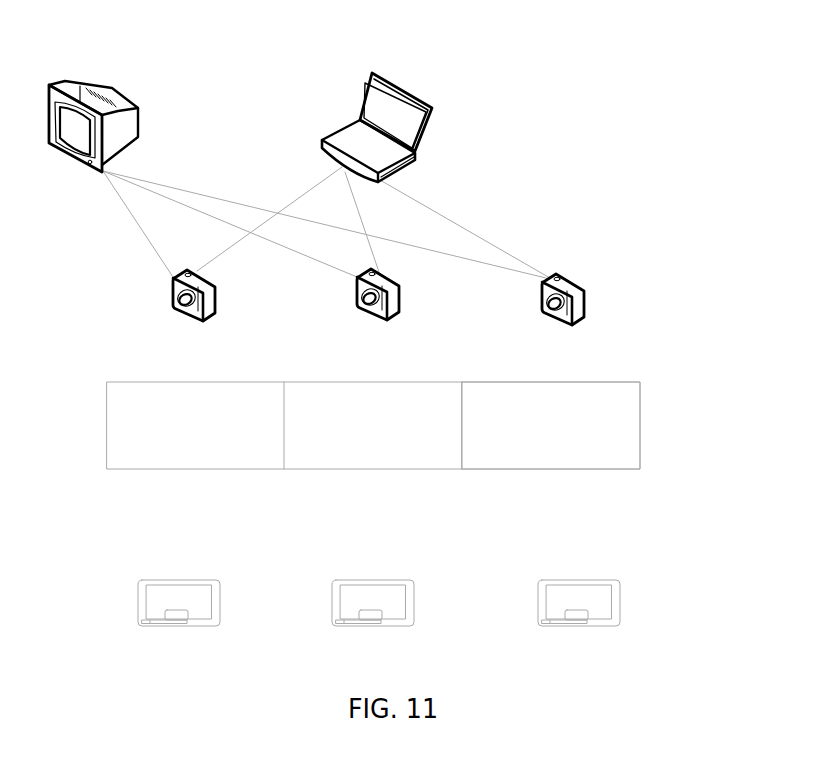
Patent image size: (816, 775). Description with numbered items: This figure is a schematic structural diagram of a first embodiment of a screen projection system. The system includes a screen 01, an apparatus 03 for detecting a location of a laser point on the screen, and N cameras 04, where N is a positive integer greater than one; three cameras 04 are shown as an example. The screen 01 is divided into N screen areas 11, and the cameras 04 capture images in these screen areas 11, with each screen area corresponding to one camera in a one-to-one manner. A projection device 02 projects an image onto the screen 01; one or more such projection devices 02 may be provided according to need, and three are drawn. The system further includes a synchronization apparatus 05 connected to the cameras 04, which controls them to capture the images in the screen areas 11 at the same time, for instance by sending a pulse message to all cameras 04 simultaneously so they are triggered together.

The synchronization apparatus 05 is at (126, 91).
The apparatus for detecting a location of a laser point on a screen 03 is at (426, 127).
The camera 04 is at (602, 275).
The screen 01 is at (423, 406).
The screen area 11 is at (584, 450).
The projection device 02 is at (417, 584).